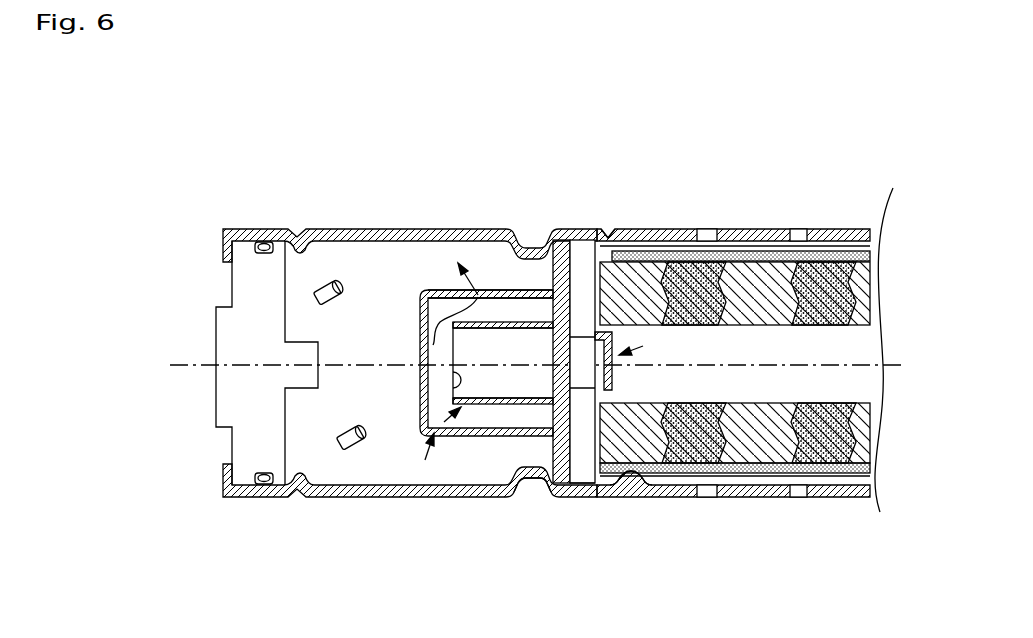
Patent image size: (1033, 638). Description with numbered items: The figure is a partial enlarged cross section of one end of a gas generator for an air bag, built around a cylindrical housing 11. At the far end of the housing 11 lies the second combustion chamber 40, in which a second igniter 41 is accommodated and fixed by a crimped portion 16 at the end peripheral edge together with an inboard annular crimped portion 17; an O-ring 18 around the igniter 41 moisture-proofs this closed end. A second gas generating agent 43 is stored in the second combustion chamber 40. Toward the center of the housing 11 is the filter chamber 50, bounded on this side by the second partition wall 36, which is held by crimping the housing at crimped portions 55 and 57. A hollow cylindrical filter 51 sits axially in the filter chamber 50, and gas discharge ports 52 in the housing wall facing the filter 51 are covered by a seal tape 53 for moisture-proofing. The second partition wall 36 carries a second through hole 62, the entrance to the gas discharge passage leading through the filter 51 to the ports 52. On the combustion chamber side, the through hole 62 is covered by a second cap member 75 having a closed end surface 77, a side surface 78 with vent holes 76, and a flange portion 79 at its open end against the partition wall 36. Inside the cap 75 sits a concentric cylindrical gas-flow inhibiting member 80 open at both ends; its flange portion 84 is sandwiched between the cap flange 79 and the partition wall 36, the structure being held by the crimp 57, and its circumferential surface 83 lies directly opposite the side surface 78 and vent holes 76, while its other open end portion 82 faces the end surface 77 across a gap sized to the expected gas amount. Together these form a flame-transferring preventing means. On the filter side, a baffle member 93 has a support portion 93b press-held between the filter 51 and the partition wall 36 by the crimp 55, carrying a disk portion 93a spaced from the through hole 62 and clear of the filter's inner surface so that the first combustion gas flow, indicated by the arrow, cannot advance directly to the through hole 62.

The cylindrical housing 11 is at (453, 290).
The crimped portion 16 is at (222, 487).
The inboard annular crimped portion 17 is at (298, 232).
The O-ring 18 is at (263, 486).
The second partition wall 36 is at (580, 260).
The second combustion chamber 40 is at (410, 287).
The second igniter 41 is at (273, 351).
The second gas generating agent 43 is at (347, 458).
The filter chamber 50 is at (837, 359).
The hollow cylindrical filter 51 is at (640, 480).
The gas discharge ports 52 is at (750, 233).
The seal tape 53 is at (655, 447).
The crimped portion 55 is at (627, 238).
The crimped portion 57 is at (534, 478).
The second through hole 62 is at (572, 375).
The second cap member 75 is at (425, 460).
The vent holes 76 is at (478, 243).
The end surface 77 is at (420, 333).
The side surface 78 is at (420, 236).
The flange portion 79 is at (508, 292).
The cylindrical gas-flow inhibiting member 80 is at (444, 422).
The other open end portion 82 is at (452, 385).
The circumferential surface 83 is at (493, 406).
The flange portion 84 is at (579, 484).
The baffle member 93 is at (643, 346).
The disk portion 93a is at (612, 378).
The support portion 93b is at (608, 237).